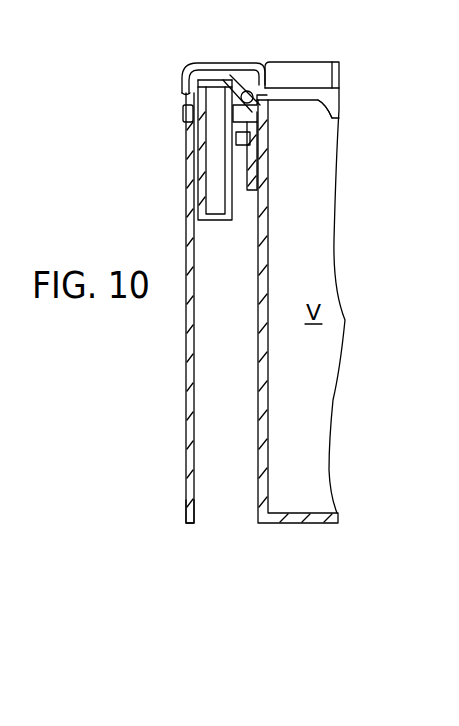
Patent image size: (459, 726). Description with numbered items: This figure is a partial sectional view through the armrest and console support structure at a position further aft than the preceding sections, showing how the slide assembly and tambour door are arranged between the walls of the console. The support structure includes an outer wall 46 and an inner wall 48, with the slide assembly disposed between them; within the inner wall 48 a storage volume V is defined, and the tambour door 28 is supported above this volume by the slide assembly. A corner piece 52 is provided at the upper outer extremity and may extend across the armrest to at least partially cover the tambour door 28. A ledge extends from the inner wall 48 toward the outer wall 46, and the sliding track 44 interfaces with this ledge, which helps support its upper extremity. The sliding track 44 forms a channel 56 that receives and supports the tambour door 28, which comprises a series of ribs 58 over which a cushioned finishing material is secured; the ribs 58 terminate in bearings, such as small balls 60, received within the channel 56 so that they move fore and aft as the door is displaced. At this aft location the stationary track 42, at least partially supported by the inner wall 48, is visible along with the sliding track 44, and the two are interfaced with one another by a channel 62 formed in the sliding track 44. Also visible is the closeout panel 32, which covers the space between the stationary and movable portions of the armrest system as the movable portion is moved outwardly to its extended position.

The tambour door 28 is at (295, 77).
The closeout panel 32 is at (188, 148).
The stationary track 42 is at (268, 137).
The sliding track 44 is at (207, 193).
The outer wall 46 is at (186, 505).
The inner wall 48 is at (258, 481).
The corner piece 52 is at (182, 78).
The channel 56 is at (222, 77).
The ribs 58 is at (335, 120).
The balls 60 is at (247, 91).
The channel 62 is at (196, 118).